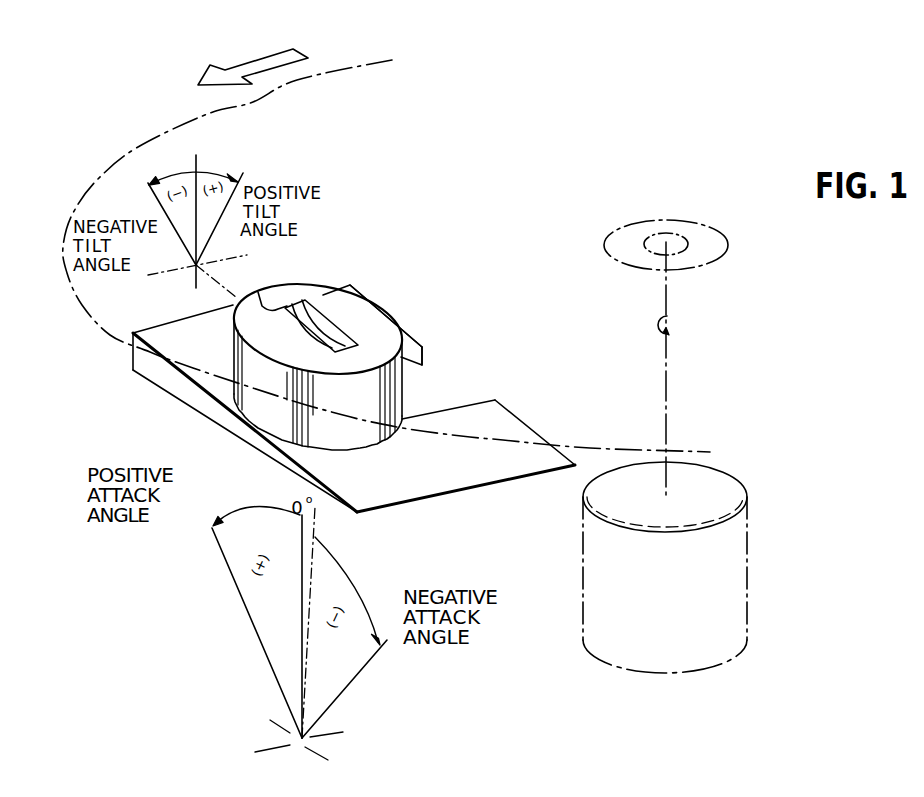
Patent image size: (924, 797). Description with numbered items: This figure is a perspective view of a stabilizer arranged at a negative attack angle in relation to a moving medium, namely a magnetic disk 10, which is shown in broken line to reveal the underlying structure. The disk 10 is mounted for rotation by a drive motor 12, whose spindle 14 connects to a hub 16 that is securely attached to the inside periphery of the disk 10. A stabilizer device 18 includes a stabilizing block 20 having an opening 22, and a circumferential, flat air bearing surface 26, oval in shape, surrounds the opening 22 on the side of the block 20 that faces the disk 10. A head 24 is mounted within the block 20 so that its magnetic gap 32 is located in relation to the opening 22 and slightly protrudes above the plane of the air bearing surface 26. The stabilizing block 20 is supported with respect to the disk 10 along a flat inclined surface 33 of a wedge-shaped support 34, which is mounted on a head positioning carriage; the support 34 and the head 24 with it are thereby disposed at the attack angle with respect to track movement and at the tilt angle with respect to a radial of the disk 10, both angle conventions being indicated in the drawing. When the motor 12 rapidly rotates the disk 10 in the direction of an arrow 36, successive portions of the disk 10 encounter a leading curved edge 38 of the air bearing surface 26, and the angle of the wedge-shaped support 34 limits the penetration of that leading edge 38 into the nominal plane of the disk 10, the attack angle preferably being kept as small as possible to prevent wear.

The magnetic disk 10 is at (138, 147).
The drive motor 12 is at (723, 490).
The spindle 14 is at (676, 325).
The hub 16 is at (627, 222).
The stabilizer device 18 is at (358, 448).
The stabilizing block 20 is at (234, 357).
The opening 22 is at (268, 303).
The head 24 is at (390, 331).
The air bearing surface 26 is at (272, 300).
The magnetic gap 32 is at (318, 315).
The inclined surface 33 is at (385, 312).
The wedge-shaped support 34 is at (372, 298).
The arrow 36 is at (248, 66).
The leading curved edge 38 is at (283, 287).